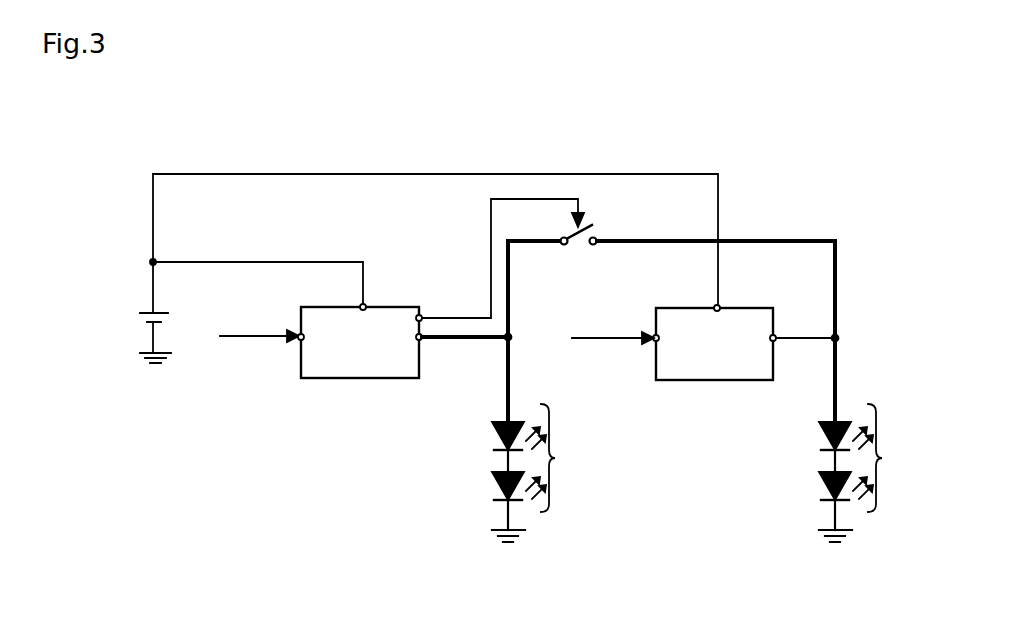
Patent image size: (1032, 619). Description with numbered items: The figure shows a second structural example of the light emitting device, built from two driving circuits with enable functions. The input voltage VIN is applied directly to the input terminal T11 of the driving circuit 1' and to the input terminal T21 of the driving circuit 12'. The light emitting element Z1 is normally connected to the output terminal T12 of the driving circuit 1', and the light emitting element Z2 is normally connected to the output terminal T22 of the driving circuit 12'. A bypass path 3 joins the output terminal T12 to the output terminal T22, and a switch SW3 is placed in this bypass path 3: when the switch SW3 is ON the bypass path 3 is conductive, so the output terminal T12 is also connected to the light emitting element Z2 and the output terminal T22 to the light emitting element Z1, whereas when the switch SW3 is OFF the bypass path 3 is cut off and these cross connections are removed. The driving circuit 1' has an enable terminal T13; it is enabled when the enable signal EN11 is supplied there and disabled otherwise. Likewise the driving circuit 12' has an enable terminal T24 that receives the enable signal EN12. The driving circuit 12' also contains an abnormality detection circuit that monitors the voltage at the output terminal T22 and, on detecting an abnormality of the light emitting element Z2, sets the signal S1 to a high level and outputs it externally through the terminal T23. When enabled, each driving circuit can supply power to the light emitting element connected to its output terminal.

The bypass path 3 is at (758, 240).
The driving circuit 1' is at (714, 329).
The driving circuit 12' is at (361, 328).
The switch SW3 is at (579, 247).
The signal S1 is at (491, 331).
The light emitting element Z1 is at (866, 473).
The light emitting element Z2 is at (539, 473).
The input terminal T11 is at (715, 304).
The output terminal T12 is at (776, 342).
The enable terminal T13 is at (654, 342).
The input terminal T21 is at (360, 303).
The output terminal T22 is at (422, 341).
The terminal T23 is at (422, 315).
The enable terminal T24 is at (299, 341).
The enable signal EN11 is at (613, 330).
The enable signal EN12 is at (259, 328).
The input voltage VIN is at (144, 311).